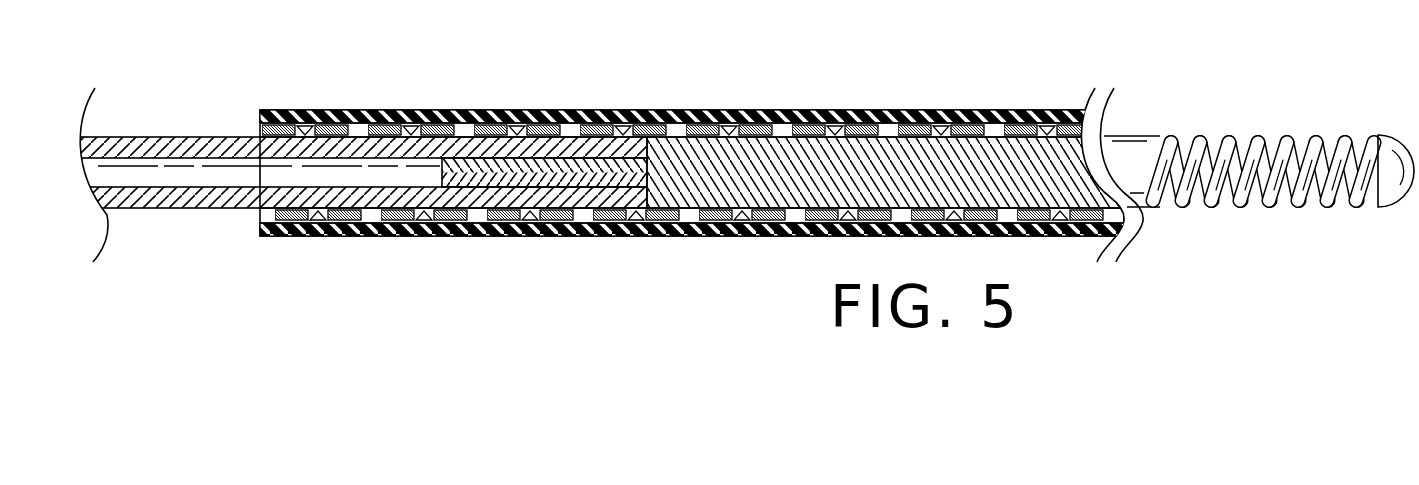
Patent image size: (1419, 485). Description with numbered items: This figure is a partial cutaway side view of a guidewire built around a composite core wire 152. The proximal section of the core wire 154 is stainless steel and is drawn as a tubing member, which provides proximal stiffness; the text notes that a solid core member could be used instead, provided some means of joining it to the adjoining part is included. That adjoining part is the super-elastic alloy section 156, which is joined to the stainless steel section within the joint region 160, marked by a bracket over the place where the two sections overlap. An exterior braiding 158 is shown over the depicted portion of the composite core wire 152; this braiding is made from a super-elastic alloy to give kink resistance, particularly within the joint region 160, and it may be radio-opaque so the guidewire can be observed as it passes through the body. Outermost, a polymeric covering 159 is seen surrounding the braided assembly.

The composite core wire 152 is at (504, 266).
The proximal section of the core wire 154 is at (167, 137).
The super-elastic alloy section 156 is at (733, 148).
The exterior braiding 158 is at (928, 122).
The polymeric covering 159 is at (997, 110).
The joint region 160 is at (648, 103).